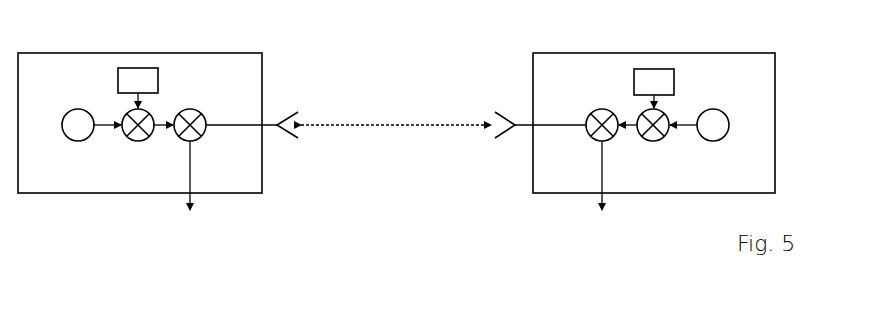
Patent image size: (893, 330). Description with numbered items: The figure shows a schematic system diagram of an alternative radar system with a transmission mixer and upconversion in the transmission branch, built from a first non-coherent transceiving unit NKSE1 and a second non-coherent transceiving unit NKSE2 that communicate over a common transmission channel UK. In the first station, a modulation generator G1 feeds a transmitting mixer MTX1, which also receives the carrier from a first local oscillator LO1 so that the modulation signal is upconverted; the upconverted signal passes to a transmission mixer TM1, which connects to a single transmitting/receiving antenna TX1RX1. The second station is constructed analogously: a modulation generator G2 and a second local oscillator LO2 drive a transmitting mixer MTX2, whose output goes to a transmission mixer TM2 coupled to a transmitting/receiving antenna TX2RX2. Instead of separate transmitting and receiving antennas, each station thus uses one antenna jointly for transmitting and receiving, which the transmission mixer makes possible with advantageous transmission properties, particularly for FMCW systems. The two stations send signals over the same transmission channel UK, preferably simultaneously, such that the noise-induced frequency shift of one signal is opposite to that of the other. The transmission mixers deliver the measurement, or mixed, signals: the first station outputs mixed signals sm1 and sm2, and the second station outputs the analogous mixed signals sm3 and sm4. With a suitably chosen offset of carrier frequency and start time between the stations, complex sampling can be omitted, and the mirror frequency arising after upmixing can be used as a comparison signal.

The first non-coherent transceiving unit NKSE1 is at (140, 112).
The second non-coherent transceiving unit NKSE2 is at (654, 112).
The modulation generator G1 is at (138, 88).
The modulation generator G2 is at (654, 88).
The first local oscillator LO1 is at (91, 125).
The second local oscillator LO2 is at (699, 125).
The transmitting mixer MTX1 is at (147, 135).
The transmitting mixer MTX2 is at (644, 135).
The transmission mixer TM1 is at (225, 159).
The transmission mixer TM2 is at (566, 159).
The transmitting/receiving antenna TX1RX1 is at (297, 117).
The transmitting/receiving antenna TX2RX2 is at (487, 117).
The transmission channel UK is at (406, 178).
The mixed signal s_m1(t) sm1 is at (160, 210).
The mixed signal s_m2(t) sm2 is at (212, 210).
The mixed signal s_m3(t) sm3 is at (625, 210).
The mixed signal s_m4(t) sm4 is at (573, 210).